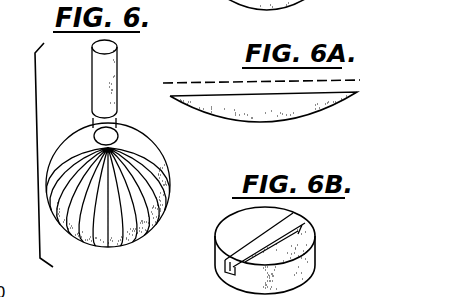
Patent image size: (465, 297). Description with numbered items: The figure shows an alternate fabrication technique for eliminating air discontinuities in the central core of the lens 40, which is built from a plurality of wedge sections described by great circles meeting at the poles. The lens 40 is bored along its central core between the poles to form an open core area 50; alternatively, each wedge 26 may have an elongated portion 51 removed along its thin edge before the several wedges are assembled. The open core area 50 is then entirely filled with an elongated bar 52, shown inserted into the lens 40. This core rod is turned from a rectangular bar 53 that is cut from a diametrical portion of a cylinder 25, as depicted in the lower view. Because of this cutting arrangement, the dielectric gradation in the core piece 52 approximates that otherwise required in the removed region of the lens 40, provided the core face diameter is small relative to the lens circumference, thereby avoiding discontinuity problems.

In FIG. 6, the elongated bar 52 is at (110, 73).
In FIG. 6, the open core area 50 is at (110, 134).
In FIG. 6, the lens 40 is at (147, 210).
In FIG. 6A, the elongated portion 51 is at (210, 84).
In FIG. 6A, the wedge 26 is at (248, 107).
In FIG. 6B, the cylinder 25 is at (295, 272).
In FIG. 6B, the rectangular bar 53 is at (225, 266).